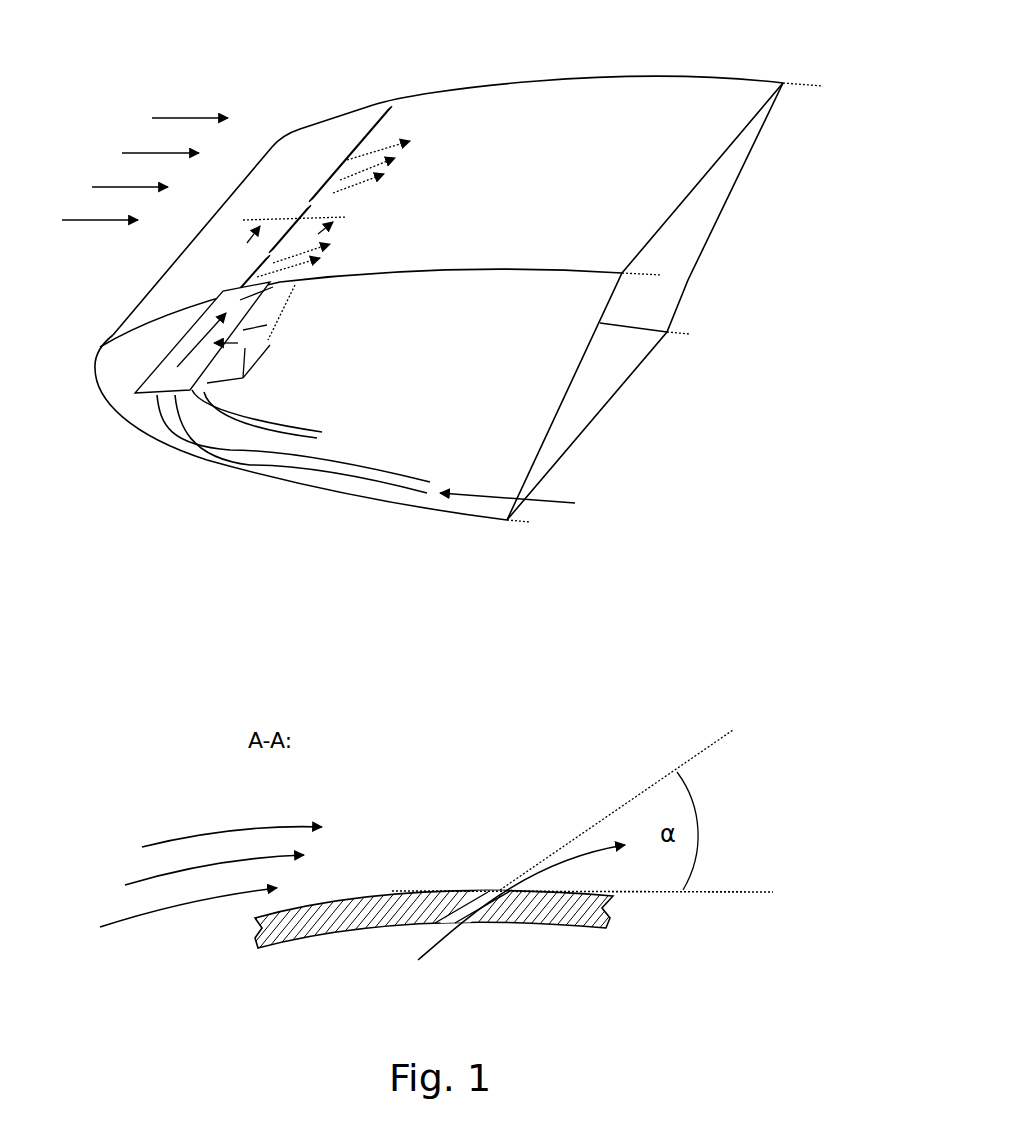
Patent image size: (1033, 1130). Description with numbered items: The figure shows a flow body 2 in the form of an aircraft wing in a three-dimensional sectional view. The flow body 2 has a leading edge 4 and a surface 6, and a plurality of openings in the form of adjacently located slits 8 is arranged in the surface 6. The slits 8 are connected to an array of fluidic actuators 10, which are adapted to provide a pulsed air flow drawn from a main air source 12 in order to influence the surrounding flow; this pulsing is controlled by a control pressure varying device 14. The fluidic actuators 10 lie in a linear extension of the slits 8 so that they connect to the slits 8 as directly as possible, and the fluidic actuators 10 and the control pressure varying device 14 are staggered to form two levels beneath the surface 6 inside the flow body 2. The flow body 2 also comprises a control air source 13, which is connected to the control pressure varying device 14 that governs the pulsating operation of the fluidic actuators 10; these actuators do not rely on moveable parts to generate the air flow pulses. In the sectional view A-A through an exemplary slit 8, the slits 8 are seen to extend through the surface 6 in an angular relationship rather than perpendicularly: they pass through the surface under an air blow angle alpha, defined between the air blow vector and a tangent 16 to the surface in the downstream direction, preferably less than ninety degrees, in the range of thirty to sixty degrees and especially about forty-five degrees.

The flow body 2 is at (373, 94).
The leading edge 4 is at (120, 300).
The surface 6 is at (527, 100).
The slits 8 is at (347, 157).
The fluidic actuators 10 is at (158, 385).
The main air source 12 is at (377, 482).
The control air source 13 is at (317, 430).
The control pressure varying device 14 is at (228, 365).
The tangent 16 is at (748, 892).